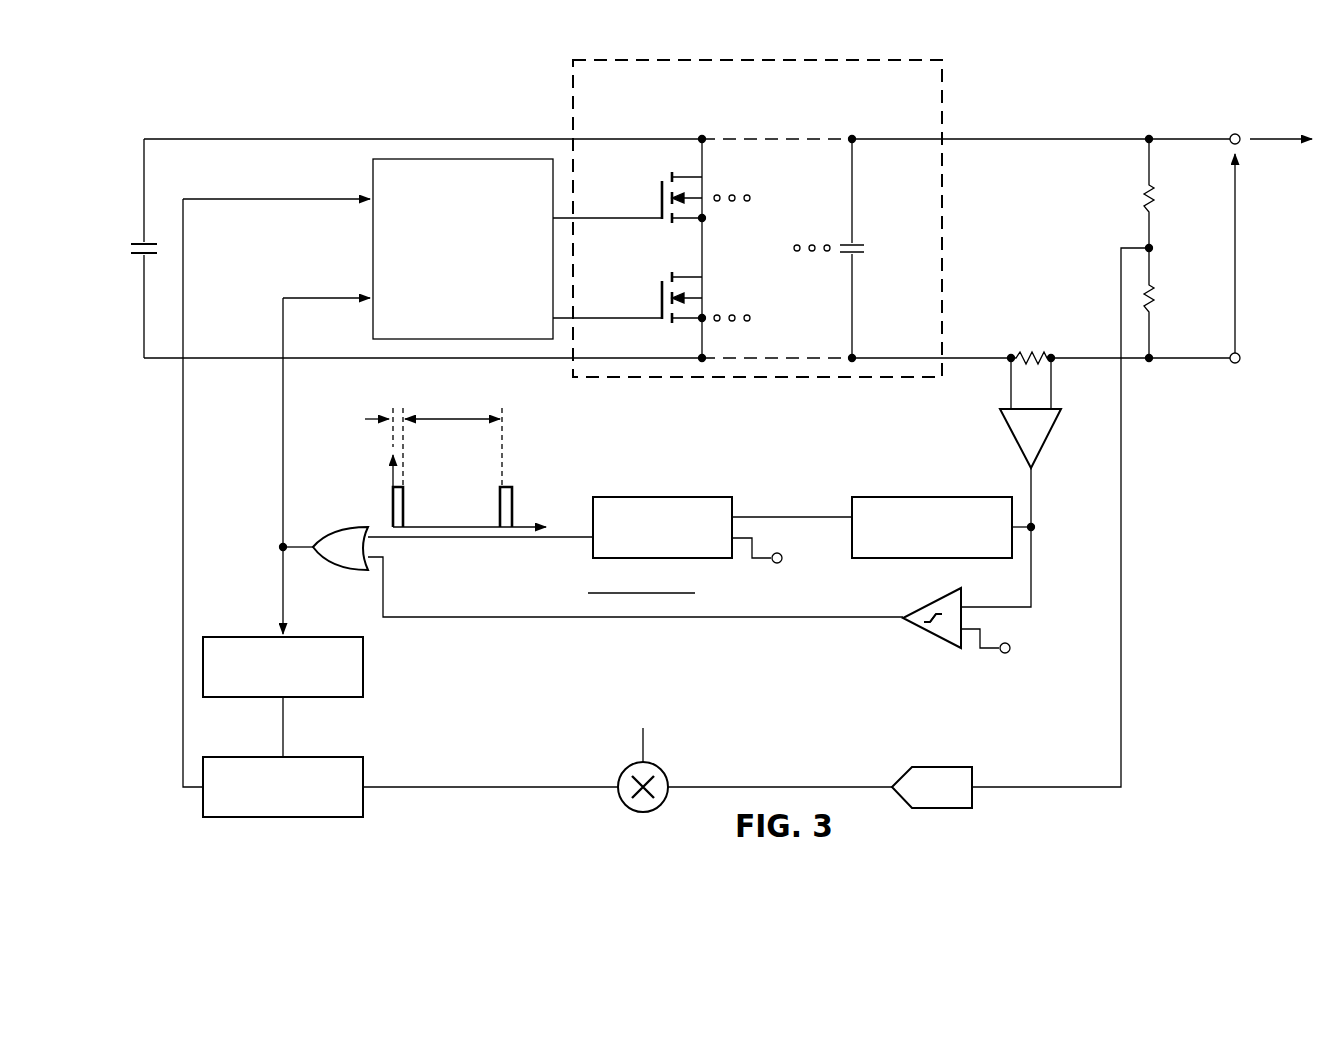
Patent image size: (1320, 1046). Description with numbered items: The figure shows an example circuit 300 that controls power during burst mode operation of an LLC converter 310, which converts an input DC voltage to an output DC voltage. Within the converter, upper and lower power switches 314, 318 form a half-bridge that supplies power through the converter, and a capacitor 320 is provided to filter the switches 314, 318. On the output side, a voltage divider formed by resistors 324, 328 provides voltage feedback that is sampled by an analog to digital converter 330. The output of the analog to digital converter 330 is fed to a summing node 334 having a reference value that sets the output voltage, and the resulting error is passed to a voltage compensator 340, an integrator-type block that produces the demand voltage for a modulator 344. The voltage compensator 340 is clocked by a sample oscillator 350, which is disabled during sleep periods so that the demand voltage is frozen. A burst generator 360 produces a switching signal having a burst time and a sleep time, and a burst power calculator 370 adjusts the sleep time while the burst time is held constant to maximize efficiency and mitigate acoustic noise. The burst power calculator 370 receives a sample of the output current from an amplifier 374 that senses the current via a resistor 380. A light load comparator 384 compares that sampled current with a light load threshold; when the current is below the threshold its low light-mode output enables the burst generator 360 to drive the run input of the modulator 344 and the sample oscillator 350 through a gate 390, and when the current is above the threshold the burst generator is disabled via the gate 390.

The circuit 300 is at (461, 100).
The LLC converter 310 is at (890, 114).
The power switch 314 is at (660, 187).
The power switch 318 is at (660, 287).
The capacitor 320 is at (131, 247).
The resistor 324 is at (1152, 197).
The resistor 328 is at (1152, 297).
The analog to digital converter 330 is at (940, 808).
The summing node 334 is at (623, 804).
The voltage compensator 340 is at (273, 817).
The modulator 344 is at (373, 248).
The sample oscillator 350 is at (250, 697).
The burst generator 360 is at (683, 497).
The burst power calculator 370 is at (933, 497).
The amplifier 374 is at (1047, 438).
The resistor 380 is at (1031, 354).
The light load comparator 384 is at (931, 640).
The gate 390 is at (344, 527).